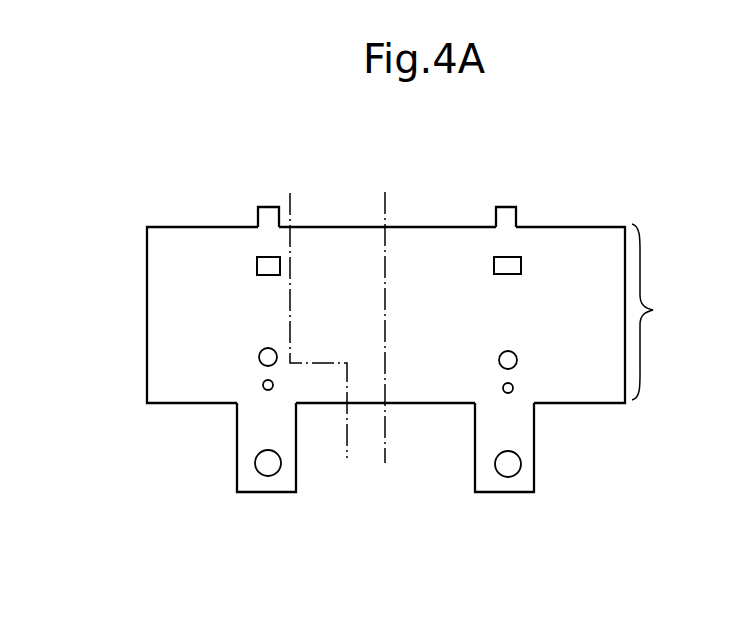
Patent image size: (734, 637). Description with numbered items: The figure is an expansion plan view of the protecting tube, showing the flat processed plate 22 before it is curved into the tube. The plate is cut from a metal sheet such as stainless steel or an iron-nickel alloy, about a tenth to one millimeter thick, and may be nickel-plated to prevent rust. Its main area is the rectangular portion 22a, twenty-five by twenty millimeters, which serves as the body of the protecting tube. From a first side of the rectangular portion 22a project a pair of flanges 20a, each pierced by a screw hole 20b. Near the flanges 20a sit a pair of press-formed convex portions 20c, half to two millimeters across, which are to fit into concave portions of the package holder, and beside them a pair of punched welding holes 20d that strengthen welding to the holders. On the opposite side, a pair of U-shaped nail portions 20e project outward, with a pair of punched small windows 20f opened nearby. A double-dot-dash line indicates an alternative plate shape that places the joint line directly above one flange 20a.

The processed plate 22 is at (566, 227).
The rectangular portion 22a is at (671, 312).
The flanges 20a is at (248, 433).
The screw hole 20b is at (268, 467).
The convex portions 20c is at (263, 386).
The welding holes 20d is at (259, 357).
The nail portions 20e is at (264, 207).
The small windows 20f is at (256, 268).